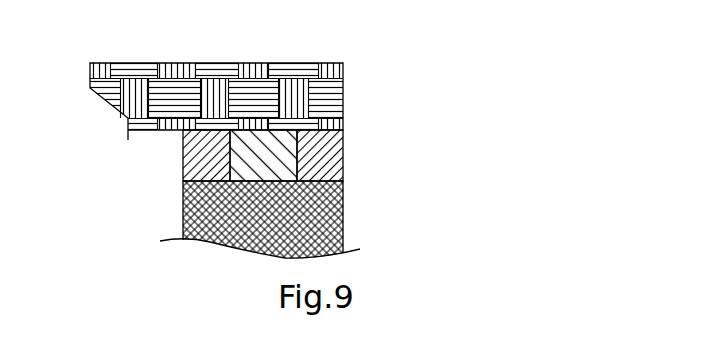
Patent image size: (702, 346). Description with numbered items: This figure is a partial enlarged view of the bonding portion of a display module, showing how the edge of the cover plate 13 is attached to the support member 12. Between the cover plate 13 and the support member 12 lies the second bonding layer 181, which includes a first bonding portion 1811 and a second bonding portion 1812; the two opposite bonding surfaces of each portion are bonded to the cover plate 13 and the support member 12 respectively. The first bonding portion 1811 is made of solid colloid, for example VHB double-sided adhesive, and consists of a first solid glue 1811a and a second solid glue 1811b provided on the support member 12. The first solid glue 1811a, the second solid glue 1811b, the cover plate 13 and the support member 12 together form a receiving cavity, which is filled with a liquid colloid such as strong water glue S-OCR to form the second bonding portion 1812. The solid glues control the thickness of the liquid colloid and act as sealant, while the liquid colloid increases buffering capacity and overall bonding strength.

The support member 12 is at (200, 203).
The cover plate 13 is at (200, 80).
The second bonding layer 181 is at (366, 176).
The first bonding portion 1811 is at (338, 185).
The first solid glue 1811a is at (218, 167).
The second solid glue 1811b is at (323, 168).
The second bonding portion 1812 is at (275, 163).